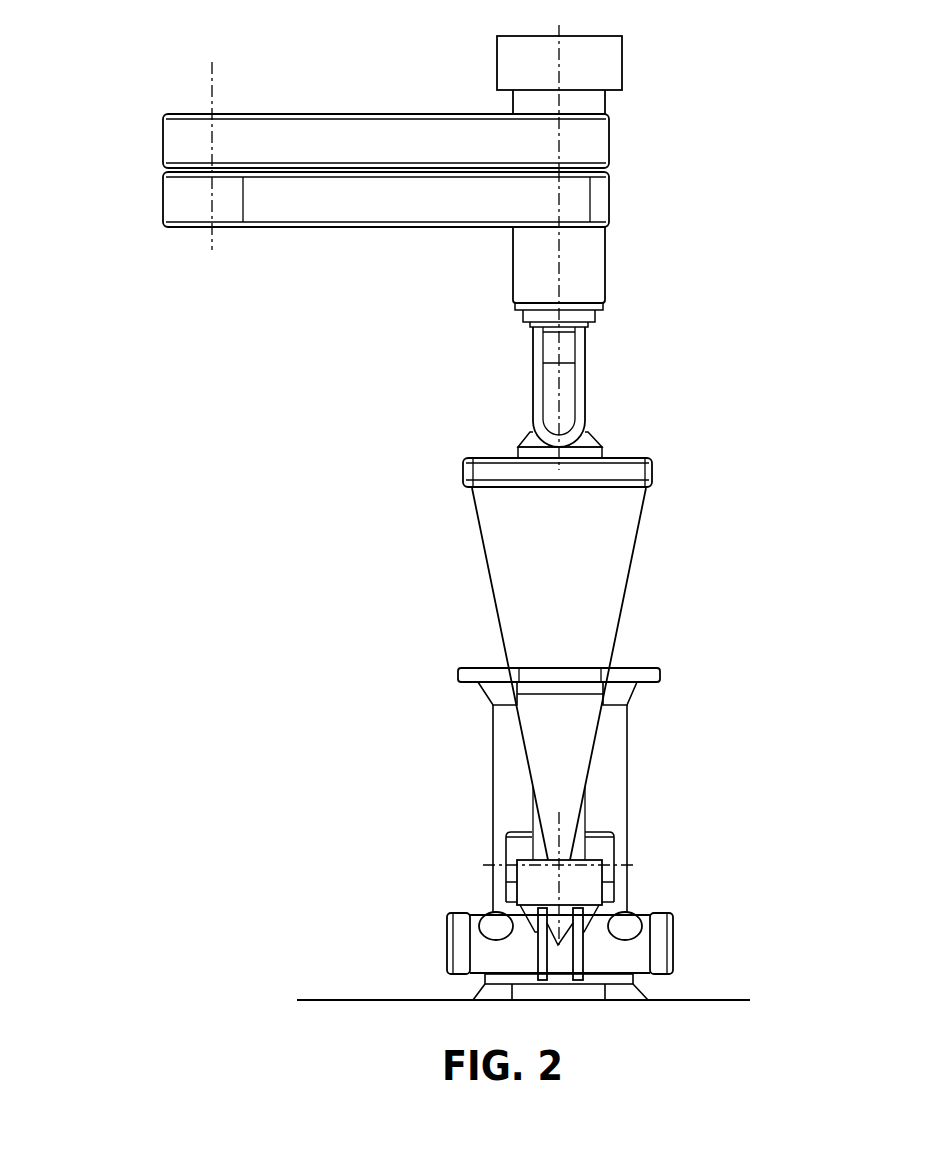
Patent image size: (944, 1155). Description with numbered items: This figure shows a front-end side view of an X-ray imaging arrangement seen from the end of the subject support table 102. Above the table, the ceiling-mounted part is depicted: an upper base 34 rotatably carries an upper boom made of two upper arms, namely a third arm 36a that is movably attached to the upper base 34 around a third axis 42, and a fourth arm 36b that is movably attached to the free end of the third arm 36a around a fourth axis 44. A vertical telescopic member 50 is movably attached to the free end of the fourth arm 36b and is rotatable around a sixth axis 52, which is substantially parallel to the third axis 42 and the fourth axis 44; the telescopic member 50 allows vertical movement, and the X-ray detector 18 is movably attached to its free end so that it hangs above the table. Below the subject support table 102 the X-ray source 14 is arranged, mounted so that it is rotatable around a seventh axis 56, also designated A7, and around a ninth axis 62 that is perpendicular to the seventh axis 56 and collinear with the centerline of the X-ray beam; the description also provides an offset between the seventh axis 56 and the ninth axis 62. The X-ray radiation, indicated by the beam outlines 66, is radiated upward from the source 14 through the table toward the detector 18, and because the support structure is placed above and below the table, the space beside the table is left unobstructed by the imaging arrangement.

The X-ray source 14 is at (673, 935).
The X-ray detector 18 is at (652, 463).
The upper base 34 is at (623, 58).
The third arm 36a is at (335, 112).
The fourth arm 36b is at (363, 227).
The third axis 42 is at (560, 148).
The fourth axis 44 is at (212, 75).
The vertical telescopic member 50 is at (605, 287).
The sixth axis 52 is at (560, 250).
The seventh axis 56 is at (620, 860).
The ninth axis 62 is at (553, 823).
The outlines of the X-ray beam 66 is at (488, 580).
The subject support table 102 is at (658, 668).
The seventh axis A7 is at (577, 866).